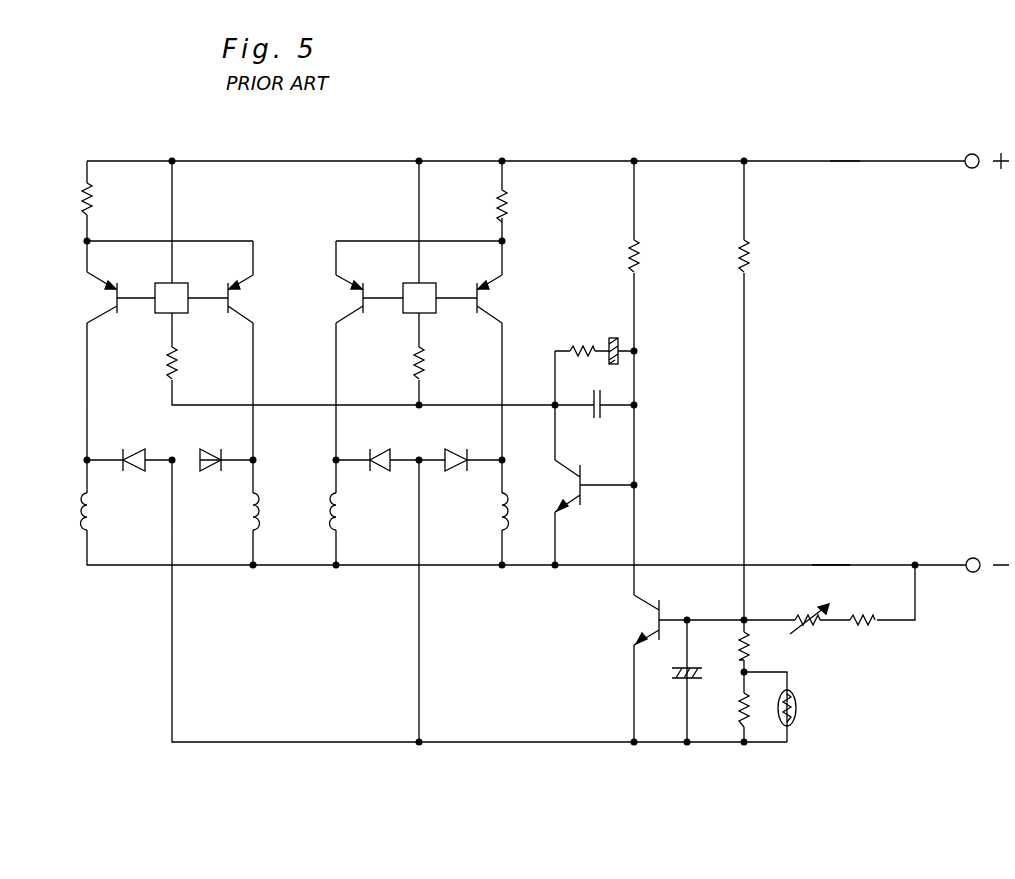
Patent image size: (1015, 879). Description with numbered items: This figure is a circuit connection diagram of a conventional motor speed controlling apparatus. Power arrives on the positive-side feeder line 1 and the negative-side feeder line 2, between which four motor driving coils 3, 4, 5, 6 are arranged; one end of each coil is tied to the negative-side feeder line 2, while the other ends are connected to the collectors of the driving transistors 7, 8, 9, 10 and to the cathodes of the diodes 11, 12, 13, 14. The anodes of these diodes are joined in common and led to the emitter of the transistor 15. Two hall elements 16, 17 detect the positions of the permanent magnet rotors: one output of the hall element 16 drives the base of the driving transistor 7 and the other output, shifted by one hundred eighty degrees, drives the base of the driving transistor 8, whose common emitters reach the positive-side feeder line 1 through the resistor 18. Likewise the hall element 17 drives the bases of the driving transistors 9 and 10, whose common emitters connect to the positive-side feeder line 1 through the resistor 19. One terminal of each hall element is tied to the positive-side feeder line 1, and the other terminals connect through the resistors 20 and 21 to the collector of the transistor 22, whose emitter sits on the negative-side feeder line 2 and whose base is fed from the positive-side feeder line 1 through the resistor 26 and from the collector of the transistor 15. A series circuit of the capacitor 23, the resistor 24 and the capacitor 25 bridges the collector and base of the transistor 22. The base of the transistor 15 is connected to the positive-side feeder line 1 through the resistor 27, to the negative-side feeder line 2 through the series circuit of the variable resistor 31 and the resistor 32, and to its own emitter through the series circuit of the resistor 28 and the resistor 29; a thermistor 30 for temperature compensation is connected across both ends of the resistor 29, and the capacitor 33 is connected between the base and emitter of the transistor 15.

The positive-side feeder line 1 is at (830, 161).
The negative-side feeder line 2 is at (812, 565).
The motor driving coil 3 is at (80, 522).
The motor driving coil 4 is at (248, 522).
The motor driving coil 5 is at (330, 522).
The motor driving coil 6 is at (497, 522).
The driving transistor 7 is at (100, 305).
The driving transistor 8 is at (247, 283).
The driving transistor 9 is at (355, 292).
The driving transistor 10 is at (492, 292).
The diode 11 is at (135, 468).
The diode 12 is at (205, 468).
The diode 13 is at (385, 468).
The diode 14 is at (455, 468).
The transistor 15 is at (640, 612).
The hall element 16 is at (180, 318).
The hall element 17 is at (428, 318).
The resistor 18 is at (93, 200).
The resistor 19 is at (508, 205).
The resistor 20 is at (167, 365).
The resistor 21 is at (414, 365).
The transistor 22 is at (568, 500).
The capacitor 23 is at (598, 420).
The resistor 24 is at (575, 348).
The capacitor 25 is at (612, 338).
The resistor 26 is at (640, 258).
The resistor 27 is at (750, 258).
The resistor 28 is at (750, 644).
The resistor 29 is at (738, 700).
The thermistor 30 is at (795, 700).
The variable resistor 31 is at (805, 612).
The resistor 32 is at (862, 614).
The capacitor 33 is at (680, 680).